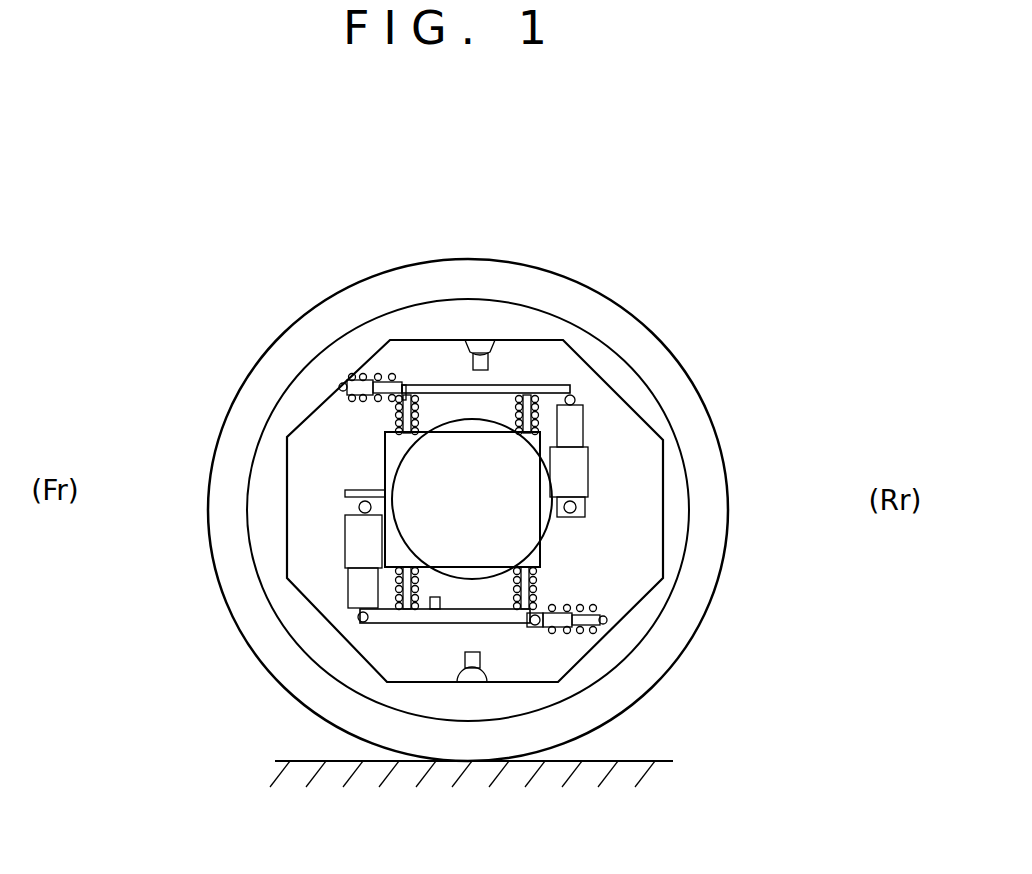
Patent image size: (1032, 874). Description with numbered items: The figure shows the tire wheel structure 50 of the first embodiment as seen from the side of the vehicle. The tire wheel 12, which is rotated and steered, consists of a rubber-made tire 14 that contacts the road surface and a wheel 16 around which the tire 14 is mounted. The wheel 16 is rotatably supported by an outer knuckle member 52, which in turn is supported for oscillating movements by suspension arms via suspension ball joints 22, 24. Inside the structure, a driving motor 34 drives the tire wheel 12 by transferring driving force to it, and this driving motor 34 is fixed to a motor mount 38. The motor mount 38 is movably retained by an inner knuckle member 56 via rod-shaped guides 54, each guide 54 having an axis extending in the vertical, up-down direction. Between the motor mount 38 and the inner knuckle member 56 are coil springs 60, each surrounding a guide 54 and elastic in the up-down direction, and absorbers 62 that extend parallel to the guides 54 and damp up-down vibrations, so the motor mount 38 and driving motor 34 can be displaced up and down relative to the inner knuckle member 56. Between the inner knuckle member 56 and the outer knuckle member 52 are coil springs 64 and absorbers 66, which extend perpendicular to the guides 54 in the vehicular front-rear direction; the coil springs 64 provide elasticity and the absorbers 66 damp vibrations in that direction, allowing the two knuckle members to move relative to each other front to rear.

The tire wheel 12 is at (828, 573).
The tire 14 is at (678, 632).
The wheel 16 is at (660, 603).
The suspension ball joint 22 is at (480, 347).
The suspension ball joint 24 is at (471, 683).
The driving motor 34 is at (438, 490).
The motor mount 38 is at (541, 556).
The tire wheel structure 50 is at (684, 309).
The outer knuckle member 52 is at (650, 430).
The guide 54 is at (452, 385).
The inner knuckle member 56 is at (437, 600).
The coil spring 60 is at (410, 393).
The absorber 62 is at (573, 425).
The coil spring 64 is at (405, 410).
The absorber 66 is at (341, 380).